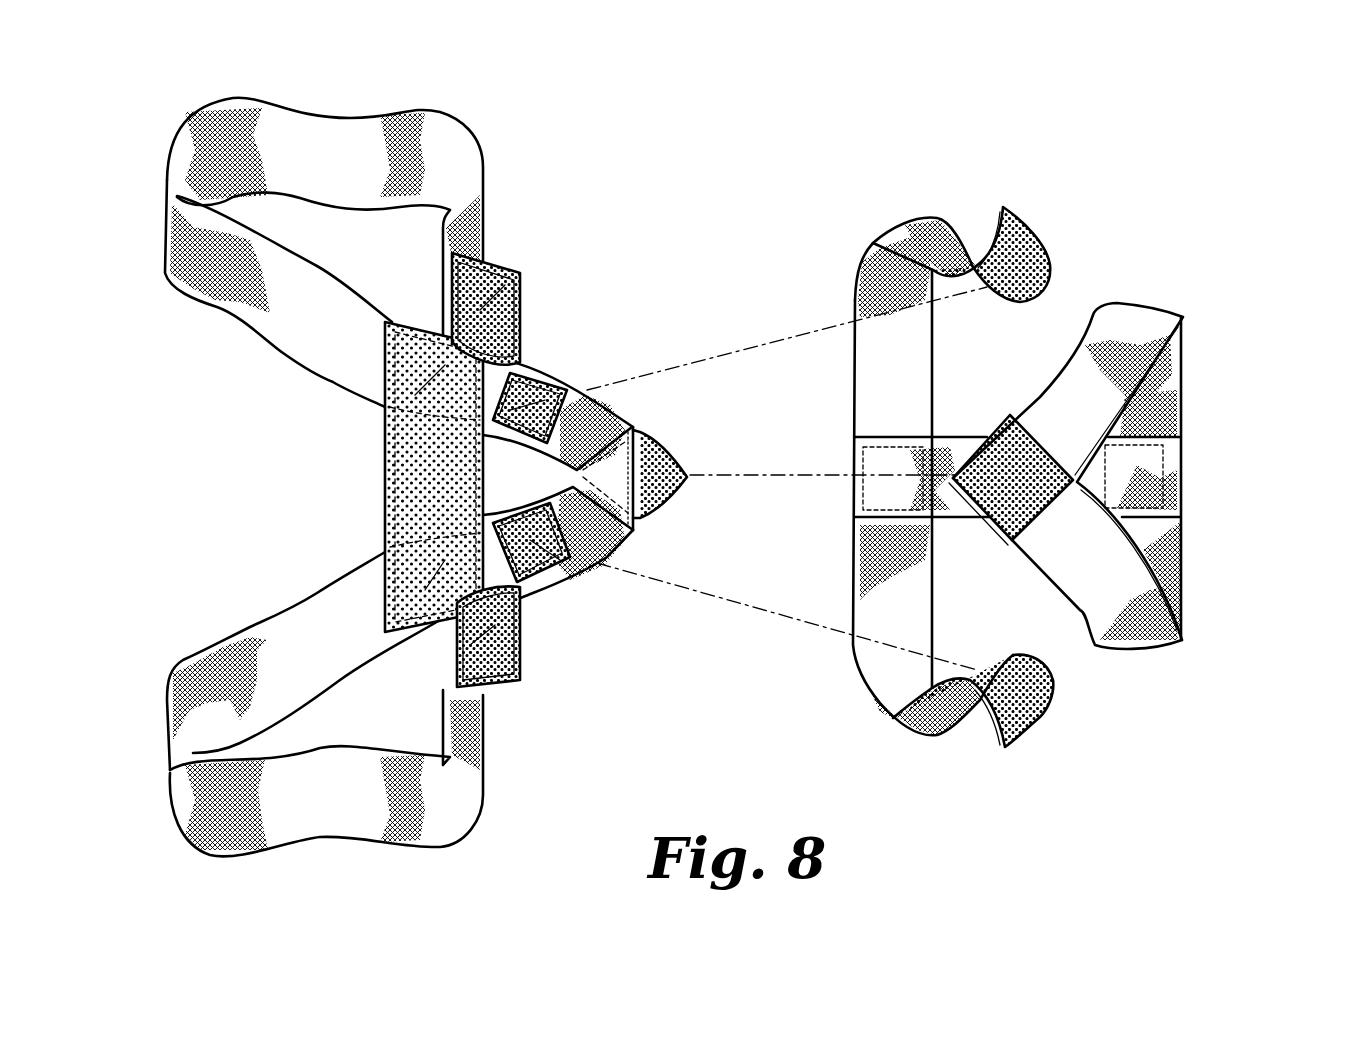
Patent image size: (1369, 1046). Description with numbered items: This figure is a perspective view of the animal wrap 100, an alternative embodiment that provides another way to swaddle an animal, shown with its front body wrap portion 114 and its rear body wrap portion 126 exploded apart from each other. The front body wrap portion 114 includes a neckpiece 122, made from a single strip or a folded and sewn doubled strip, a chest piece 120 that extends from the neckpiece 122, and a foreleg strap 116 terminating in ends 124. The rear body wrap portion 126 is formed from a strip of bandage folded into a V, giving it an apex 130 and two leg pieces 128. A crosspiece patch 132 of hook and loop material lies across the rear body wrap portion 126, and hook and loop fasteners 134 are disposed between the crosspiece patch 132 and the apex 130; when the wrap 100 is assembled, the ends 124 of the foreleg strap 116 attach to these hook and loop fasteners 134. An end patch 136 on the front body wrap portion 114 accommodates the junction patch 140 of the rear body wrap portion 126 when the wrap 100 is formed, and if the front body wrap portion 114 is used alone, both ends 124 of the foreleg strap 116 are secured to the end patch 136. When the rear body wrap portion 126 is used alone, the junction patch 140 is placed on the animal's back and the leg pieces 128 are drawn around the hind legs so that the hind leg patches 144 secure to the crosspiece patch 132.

The wrap 100 is at (1186, 74).
The front body wrap portion 114 is at (1127, 248).
The foreleg strap 116 is at (865, 258).
The chest piece 120 is at (972, 437).
The neckpiece 122 is at (1185, 345).
The ends 124 is at (1033, 230).
The rear body wrap portion 126 is at (547, 86).
The leg pieces 128 is at (293, 127).
The apex 130 is at (620, 462).
The crosspiece patch 132 is at (405, 488).
The hook and loop fasteners 134 is at (548, 365).
The end patch 136 is at (1010, 505).
The junction patch 140 is at (663, 488).
The hind leg patches 144 is at (488, 280).